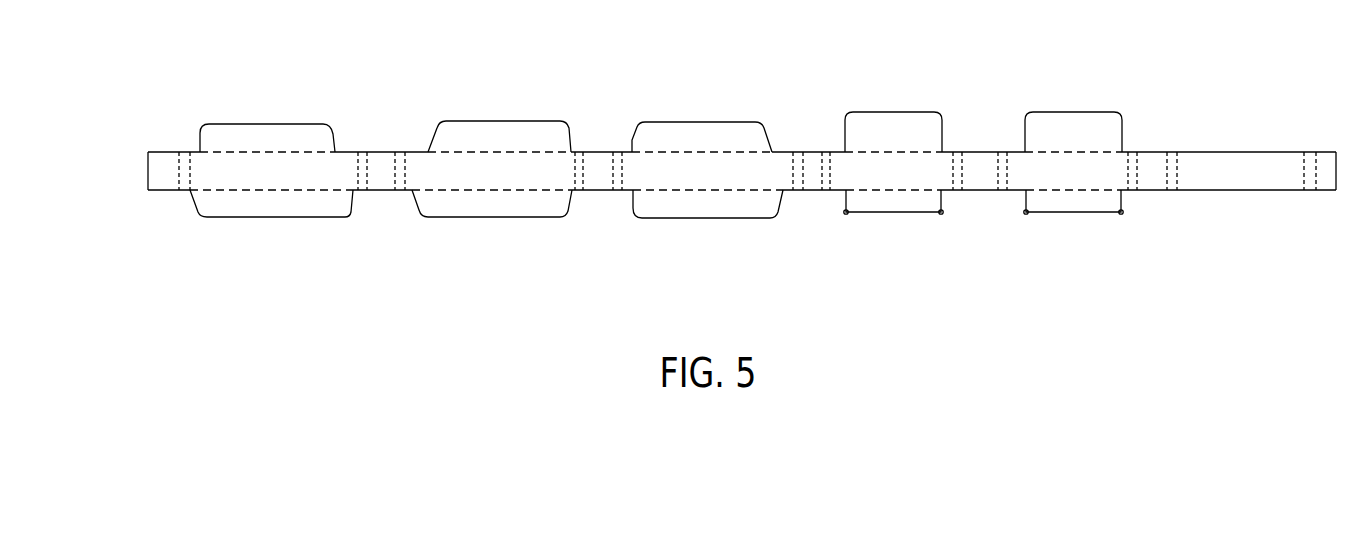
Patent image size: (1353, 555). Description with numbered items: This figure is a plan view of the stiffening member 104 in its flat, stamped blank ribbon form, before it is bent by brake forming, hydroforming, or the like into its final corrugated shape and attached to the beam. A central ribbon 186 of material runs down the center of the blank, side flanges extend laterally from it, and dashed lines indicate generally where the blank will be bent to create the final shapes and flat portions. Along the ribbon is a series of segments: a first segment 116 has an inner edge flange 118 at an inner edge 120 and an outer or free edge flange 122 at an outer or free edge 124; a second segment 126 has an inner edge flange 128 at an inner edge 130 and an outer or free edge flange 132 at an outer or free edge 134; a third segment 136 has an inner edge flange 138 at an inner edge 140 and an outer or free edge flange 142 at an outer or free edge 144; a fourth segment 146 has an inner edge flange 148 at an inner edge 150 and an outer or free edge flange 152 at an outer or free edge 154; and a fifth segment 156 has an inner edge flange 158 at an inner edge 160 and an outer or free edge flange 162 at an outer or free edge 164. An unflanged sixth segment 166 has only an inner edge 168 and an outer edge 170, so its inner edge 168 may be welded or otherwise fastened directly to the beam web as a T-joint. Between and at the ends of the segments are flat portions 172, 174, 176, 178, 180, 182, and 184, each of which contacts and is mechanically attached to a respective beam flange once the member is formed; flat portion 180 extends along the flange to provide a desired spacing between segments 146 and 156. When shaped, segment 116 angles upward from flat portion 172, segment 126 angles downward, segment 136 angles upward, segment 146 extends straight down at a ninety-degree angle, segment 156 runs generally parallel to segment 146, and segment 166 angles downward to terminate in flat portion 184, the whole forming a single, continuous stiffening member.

The stiffening member 104 is at (222, 60).
The first segment 116 is at (265, 185).
The inner edge flange 118 is at (282, 122).
The inner edge 120 is at (322, 138).
The outer or free edge flange 122 is at (282, 218).
The outer or free edge 124 is at (323, 205).
The second segment 126 is at (487, 185).
The inner edge flange 128 is at (500, 121).
The inner edge 130 is at (540, 138).
The outer or free edge flange 132 is at (500, 218).
The outer or free edge 134 is at (540, 205).
The third segment 136 is at (698, 185).
The inner edge flange 138 is at (715, 122).
The inner edge 140 is at (755, 138).
The outer or free edge flange 142 is at (715, 218).
The outer or free edge 144 is at (755, 205).
The fourth segment 146 is at (881, 185).
The inner edge flange 148 is at (884, 112).
The inner edge 150 is at (925, 138).
The outer or free edge flange 152 is at (884, 213).
The outer or free edge 154 is at (925, 205).
The fifth segment 156 is at (1065, 185).
The inner edge flange 158 is at (1055, 112).
The inner edge 160 is at (1097, 138).
The outer or free edge flange 162 is at (1055, 213).
The outer or free edge 164 is at (1097, 205).
The sixth segment 166 is at (1229, 185).
The inner edge 168 is at (1247, 140).
The outer edge 170 is at (1247, 203).
The flat portion 172 is at (158, 177).
The flat portion 174 is at (380, 160).
The flat portion 176 is at (598, 160).
The flat portion 178 is at (812, 160).
The flat portion 180 is at (982, 160).
The flat portion 182 is at (1153, 160).
The flat portion 184 is at (1325, 178).
The central ribbon 186 is at (134, 172).